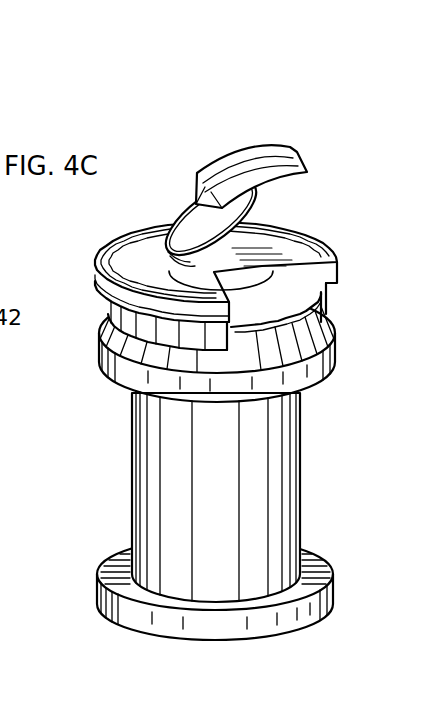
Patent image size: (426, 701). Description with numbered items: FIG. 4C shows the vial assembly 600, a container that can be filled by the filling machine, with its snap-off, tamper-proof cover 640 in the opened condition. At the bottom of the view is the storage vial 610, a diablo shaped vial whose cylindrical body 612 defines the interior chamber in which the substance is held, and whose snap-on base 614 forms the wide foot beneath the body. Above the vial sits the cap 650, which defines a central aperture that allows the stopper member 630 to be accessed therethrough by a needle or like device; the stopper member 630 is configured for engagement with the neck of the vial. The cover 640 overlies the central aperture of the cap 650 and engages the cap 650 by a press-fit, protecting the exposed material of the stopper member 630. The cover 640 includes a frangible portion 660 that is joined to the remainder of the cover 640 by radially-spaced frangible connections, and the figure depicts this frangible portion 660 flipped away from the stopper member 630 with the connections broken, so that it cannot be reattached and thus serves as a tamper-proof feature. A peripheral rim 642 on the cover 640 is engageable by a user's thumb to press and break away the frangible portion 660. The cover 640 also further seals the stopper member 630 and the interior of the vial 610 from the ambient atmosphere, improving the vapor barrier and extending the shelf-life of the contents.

The vial assembly 600 is at (227, 349).
The storage vial 610 is at (243, 515).
The cylindrical body 612 is at (302, 496).
The snap-on base 614 is at (320, 553).
The stopper member 630 is at (172, 267).
The cover 640 is at (214, 230).
The cap rim 642 is at (106, 258).
The cap 650 is at (342, 330).
The frangible portion 660 is at (268, 152).